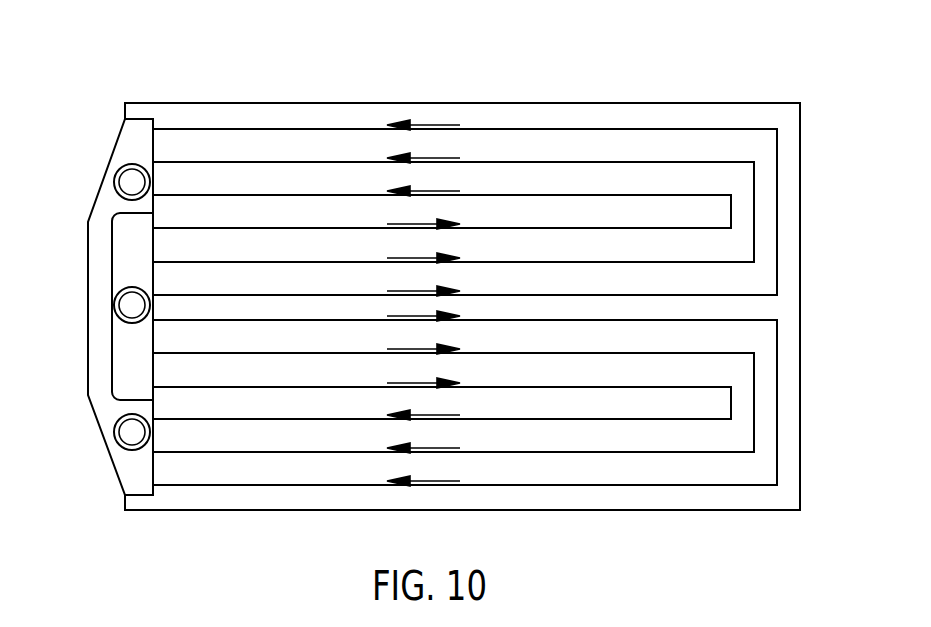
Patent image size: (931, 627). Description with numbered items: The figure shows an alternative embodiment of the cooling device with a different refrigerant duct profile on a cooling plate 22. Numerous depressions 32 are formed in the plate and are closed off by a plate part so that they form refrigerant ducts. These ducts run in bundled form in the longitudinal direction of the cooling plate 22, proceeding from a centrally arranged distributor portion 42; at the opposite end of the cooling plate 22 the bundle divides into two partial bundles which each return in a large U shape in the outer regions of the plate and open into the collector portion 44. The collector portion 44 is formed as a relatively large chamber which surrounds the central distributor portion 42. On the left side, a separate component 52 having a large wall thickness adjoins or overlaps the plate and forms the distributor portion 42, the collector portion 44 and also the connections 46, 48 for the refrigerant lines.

The cooling plate 22 is at (537, 98).
The depressions 32 is at (753, 295).
The distributor portion 42 is at (128, 238).
The collector portion 44 is at (128, 182).
The connection for refrigerant line 46 is at (128, 305).
The connection for refrigerant line 48 is at (132, 432).
The separate component 52 is at (133, 480).